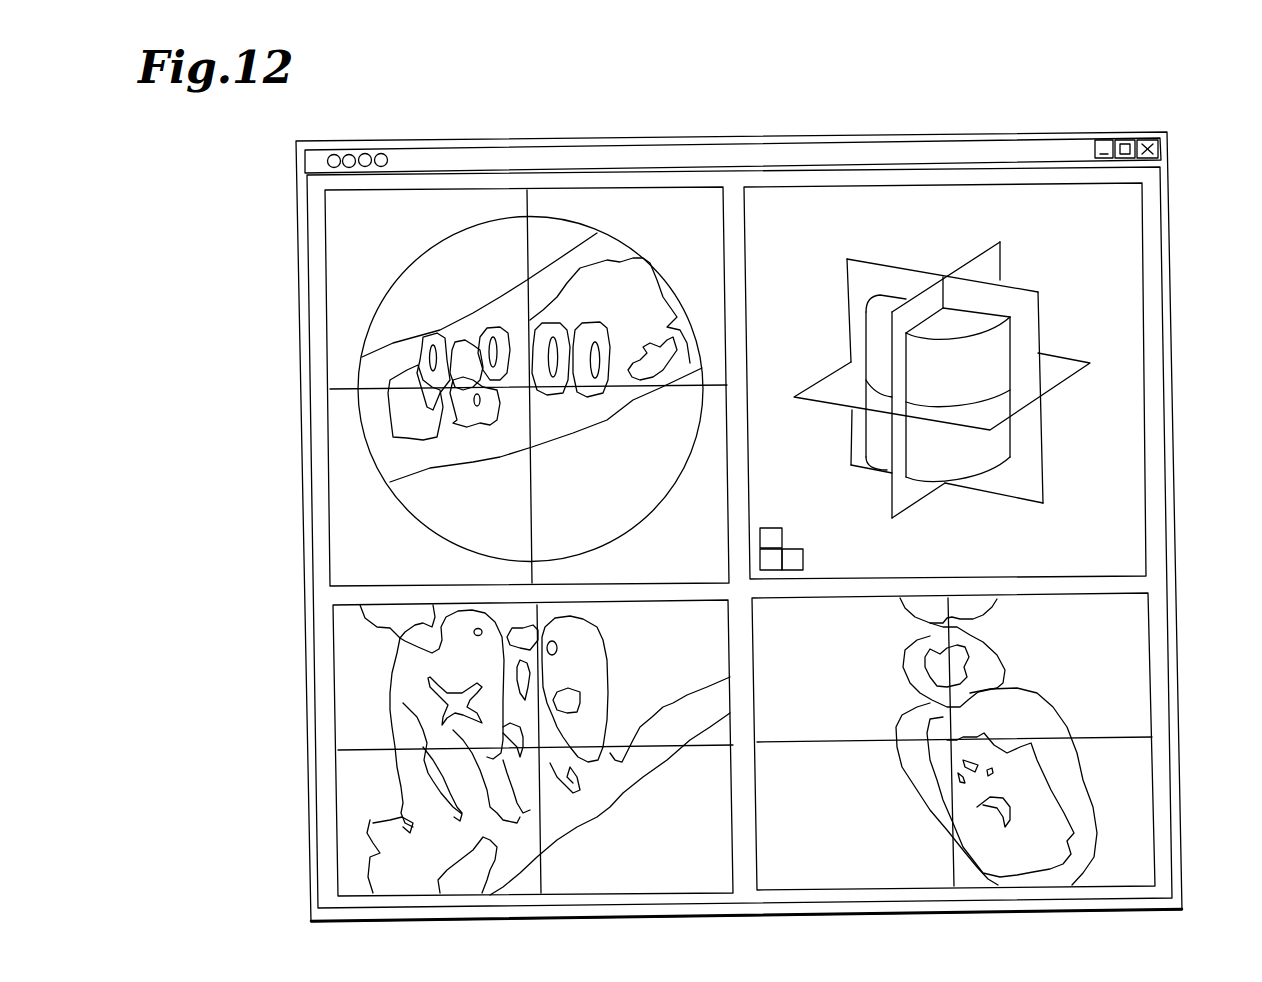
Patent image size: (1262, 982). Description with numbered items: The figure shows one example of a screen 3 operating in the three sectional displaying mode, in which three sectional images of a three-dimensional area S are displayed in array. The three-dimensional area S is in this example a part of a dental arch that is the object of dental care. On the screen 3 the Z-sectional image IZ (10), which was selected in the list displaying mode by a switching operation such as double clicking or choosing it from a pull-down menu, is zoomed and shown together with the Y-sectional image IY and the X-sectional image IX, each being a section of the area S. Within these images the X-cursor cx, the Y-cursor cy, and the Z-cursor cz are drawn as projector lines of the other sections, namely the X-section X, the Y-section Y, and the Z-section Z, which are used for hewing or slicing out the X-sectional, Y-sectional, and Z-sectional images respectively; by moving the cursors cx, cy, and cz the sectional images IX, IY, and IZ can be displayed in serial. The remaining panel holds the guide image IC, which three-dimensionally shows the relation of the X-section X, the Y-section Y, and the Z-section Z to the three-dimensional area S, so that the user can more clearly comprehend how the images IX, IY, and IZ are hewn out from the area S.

The screen 3 is at (1170, 270).
The Z-sectional image IZ is at (468, 386).
The Z-sectional image 10 is at (353, 255).
The guide image IC is at (986, 381).
The Y-sectional image IY is at (348, 676).
The X-sectional image IX is at (1137, 642).
The X-cursor cx is at (525, 205).
The Y-cursor cy is at (688, 372).
The Z-cursor cz is at (688, 756).
The three-dimensional area S is at (435, 482).
The X-section X is at (933, 380).
The Y-section Y is at (933, 381).
The Z-section Z is at (937, 391).